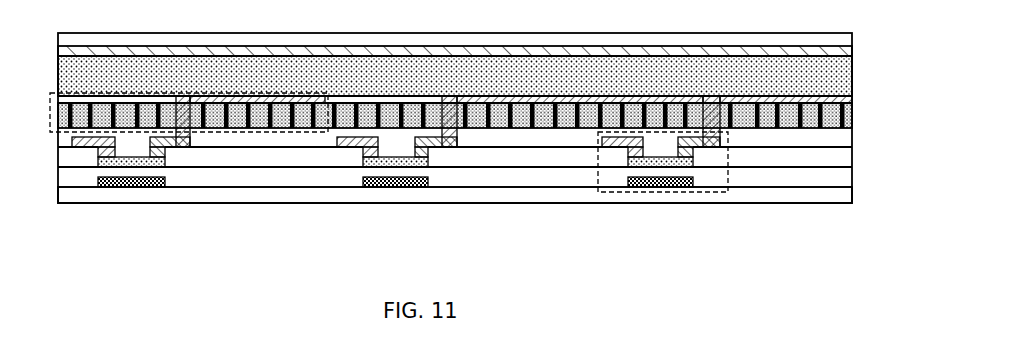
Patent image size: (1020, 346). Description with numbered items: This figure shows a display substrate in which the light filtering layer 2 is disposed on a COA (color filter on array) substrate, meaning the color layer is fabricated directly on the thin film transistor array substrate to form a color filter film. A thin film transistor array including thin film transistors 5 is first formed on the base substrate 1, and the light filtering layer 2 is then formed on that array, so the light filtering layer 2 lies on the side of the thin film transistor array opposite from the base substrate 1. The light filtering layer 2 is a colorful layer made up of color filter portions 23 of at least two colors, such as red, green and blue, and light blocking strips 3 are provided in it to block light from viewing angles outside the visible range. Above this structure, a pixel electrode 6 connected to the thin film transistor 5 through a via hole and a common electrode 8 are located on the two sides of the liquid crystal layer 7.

The base substrate 1 is at (777, 198).
The light filtering layer 2 is at (850, 120).
The light blocking strip 3 is at (832, 124).
The thin film transistor 5 is at (729, 185).
The pixel electrode 6 is at (850, 97).
The liquid crystal layer 7 is at (850, 75).
The common electrode 8 is at (852, 47).
The color filter portions 23 is at (50, 132).